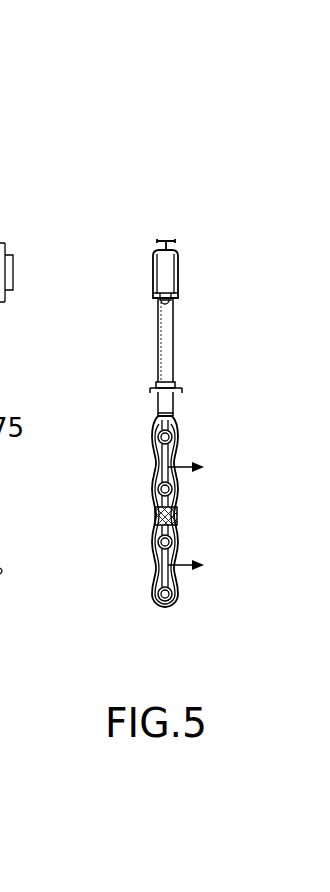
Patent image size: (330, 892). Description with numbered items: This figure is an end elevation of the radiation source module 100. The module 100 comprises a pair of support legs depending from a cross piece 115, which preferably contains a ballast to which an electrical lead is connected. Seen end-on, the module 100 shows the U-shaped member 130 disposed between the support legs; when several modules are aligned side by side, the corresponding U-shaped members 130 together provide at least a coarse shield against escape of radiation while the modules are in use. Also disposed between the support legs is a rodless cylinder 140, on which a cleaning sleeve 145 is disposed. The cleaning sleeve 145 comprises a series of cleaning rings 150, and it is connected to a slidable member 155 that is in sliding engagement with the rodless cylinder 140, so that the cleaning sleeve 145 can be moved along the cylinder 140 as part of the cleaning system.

The radiation source module 100 is at (165, 208).
The cross piece 115 is at (163, 273).
The U-shaped member 130 is at (150, 390).
The rodless cylinder 140 is at (178, 528).
The cleaning sleeve 145 is at (138, 460).
The cleaning rings 150 is at (152, 432).
The slidable member 155 is at (155, 508).